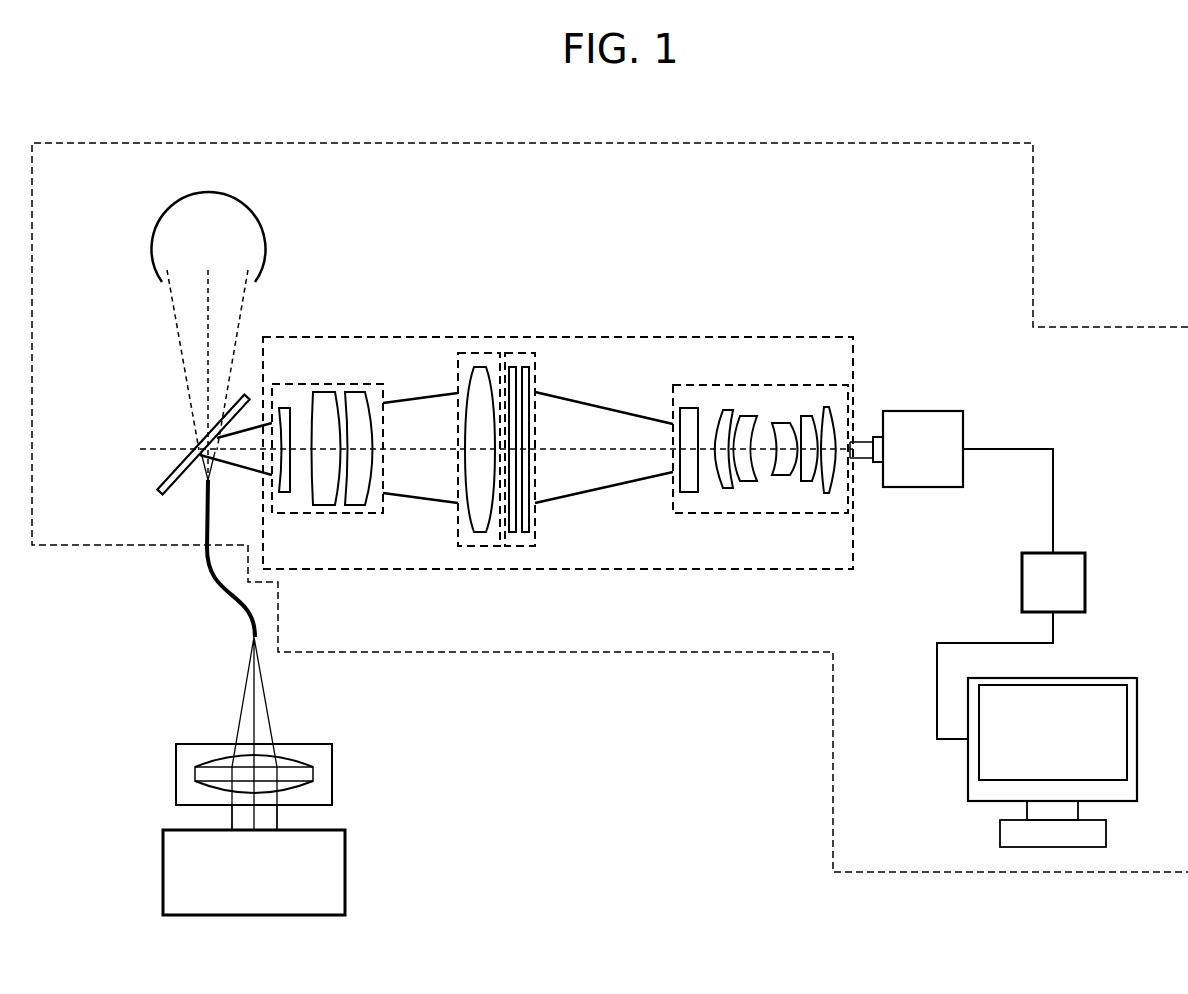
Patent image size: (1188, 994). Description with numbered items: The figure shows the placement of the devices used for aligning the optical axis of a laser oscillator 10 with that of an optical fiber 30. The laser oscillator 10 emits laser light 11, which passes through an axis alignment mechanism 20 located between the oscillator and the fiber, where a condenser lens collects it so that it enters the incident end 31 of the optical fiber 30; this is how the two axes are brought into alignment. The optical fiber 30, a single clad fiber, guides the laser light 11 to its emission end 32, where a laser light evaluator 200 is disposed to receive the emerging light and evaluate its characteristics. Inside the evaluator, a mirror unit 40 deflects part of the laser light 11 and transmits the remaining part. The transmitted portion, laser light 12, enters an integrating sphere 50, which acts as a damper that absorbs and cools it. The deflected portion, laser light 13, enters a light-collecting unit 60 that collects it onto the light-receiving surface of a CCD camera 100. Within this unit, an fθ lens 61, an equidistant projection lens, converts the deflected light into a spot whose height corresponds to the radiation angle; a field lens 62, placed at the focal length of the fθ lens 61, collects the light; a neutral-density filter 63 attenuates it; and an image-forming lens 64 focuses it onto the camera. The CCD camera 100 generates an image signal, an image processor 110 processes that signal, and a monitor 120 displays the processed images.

The laser light evaluator 200 is at (503, 143).
The integrating sphere 50 is at (152, 244).
The laser light 12 is at (182, 348).
The laser light 13 is at (252, 427).
The mirror unit 40 is at (175, 463).
The emission end 32 is at (202, 495).
The optical fiber 30 is at (203, 562).
The incident end 31 is at (253, 635).
The axis alignment mechanism 20 is at (333, 765).
The laser light 11 is at (277, 819).
The laser oscillator 10 is at (345, 872).
The light-collecting unit 60 is at (651, 327).
The fθ lens 61 is at (333, 513).
The field lens 62 is at (461, 546).
The neutral-density filter 63 is at (518, 546).
The image-forming lens 64 is at (760, 513).
The CCD camera 100 is at (922, 487).
The image processor 110 is at (1085, 575).
The monitor 120 is at (968, 783).